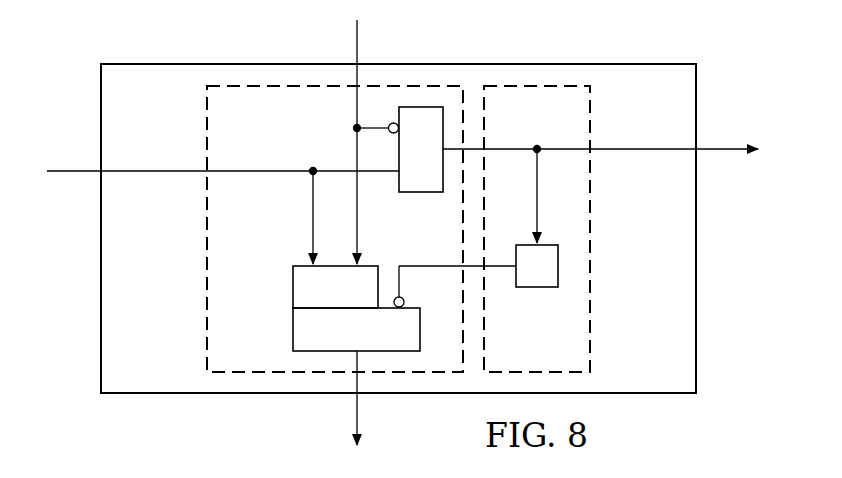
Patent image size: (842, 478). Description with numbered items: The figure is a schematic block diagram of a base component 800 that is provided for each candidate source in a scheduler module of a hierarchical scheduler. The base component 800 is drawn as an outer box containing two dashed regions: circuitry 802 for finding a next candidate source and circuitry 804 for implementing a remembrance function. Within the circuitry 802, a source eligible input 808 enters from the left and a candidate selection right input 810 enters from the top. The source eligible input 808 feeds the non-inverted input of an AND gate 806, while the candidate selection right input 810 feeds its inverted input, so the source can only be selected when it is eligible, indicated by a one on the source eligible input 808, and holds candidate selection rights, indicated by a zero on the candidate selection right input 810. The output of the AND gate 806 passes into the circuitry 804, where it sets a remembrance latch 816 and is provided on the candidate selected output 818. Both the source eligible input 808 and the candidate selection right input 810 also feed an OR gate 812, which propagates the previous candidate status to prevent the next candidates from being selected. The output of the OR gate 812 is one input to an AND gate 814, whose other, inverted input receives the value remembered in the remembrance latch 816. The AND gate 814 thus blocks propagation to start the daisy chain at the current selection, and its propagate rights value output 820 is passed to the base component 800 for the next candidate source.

The base component 800 is at (594, 60).
The circuitry for finding a next candidate source 802 is at (203, 266).
The circuitry for implementing a remembrance function 804 is at (596, 268).
The AND gate 806 is at (415, 192).
The source eligible input 808 is at (80, 168).
The candidate selection right input 810 is at (356, 42).
The OR gate 812 is at (292, 292).
The AND gate 814 is at (292, 333).
The remembrance latch 816 is at (548, 287).
The candidate selected output 818 is at (716, 148).
The propagate rights value output 820 is at (354, 418).